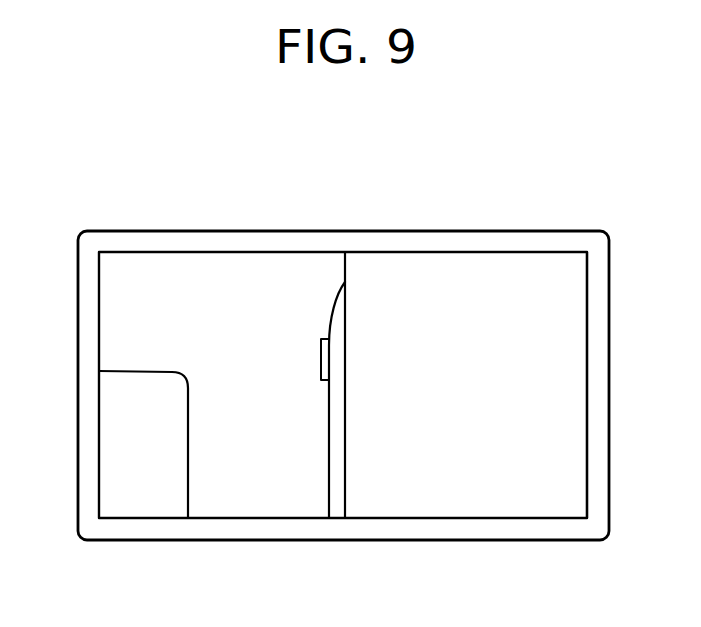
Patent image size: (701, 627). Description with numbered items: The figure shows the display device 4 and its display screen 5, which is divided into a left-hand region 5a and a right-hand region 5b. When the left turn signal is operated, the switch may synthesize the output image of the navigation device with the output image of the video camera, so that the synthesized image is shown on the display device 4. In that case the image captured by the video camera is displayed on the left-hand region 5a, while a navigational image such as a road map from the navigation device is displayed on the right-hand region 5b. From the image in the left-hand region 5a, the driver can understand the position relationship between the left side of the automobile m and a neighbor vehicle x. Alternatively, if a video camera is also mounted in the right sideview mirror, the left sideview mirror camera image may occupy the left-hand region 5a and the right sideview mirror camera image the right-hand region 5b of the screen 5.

The display device 4 is at (470, 541).
The display screen 5 is at (588, 376).
The left-hand region 5a is at (214, 253).
The right-hand region 5b is at (465, 253).
The neighbor vehicle x is at (143, 400).
The automobile m is at (335, 495).